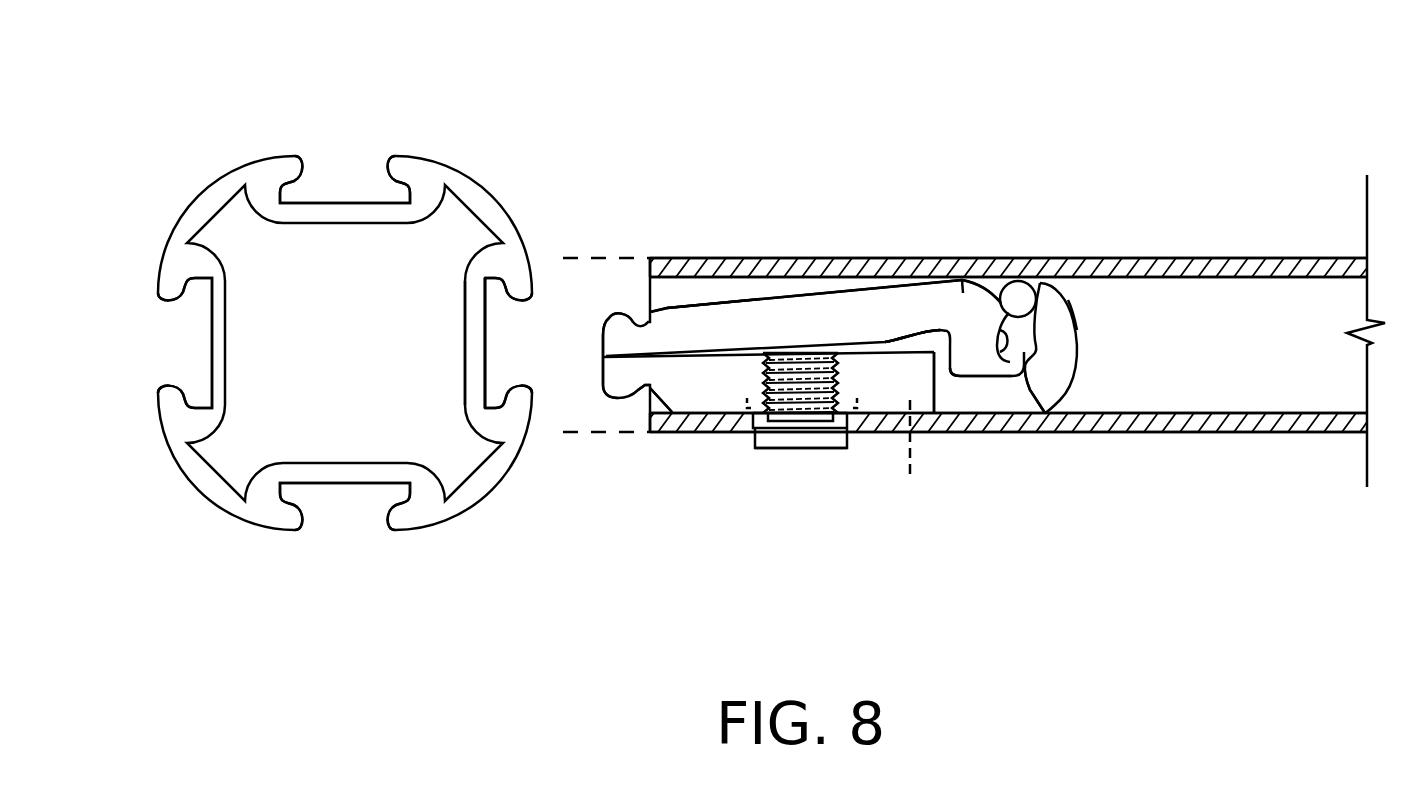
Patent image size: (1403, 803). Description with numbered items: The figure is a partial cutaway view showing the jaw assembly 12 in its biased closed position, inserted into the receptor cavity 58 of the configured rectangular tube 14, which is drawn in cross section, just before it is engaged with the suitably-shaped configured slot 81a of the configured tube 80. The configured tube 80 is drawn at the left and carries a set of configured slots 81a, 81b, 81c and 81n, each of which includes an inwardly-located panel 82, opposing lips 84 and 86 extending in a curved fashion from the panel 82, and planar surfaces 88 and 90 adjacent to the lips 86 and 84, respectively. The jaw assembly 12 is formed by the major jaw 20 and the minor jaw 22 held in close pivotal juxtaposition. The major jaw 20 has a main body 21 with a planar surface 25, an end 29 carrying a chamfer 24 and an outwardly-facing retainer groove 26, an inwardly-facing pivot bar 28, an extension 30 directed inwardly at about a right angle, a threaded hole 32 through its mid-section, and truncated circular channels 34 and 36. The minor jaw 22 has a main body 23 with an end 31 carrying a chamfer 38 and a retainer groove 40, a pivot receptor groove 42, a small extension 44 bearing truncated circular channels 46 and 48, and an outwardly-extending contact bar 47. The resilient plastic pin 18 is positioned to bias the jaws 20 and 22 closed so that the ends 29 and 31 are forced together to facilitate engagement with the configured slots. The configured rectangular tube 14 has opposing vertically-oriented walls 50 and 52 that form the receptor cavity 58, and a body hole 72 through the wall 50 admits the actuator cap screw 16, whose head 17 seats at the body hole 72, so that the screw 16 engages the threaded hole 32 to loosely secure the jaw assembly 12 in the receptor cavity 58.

The jaw assembly 12 is at (711, 284).
The configured rectangular tube 14 is at (1164, 252).
The actuator cap screw 16 is at (763, 450).
The head 17 is at (832, 443).
The resilient plastic pin 18 is at (1018, 293).
The major jaw 20 is at (712, 394).
The main body 21 is at (733, 397).
The minor jaw 22 is at (771, 311).
The main body 23 is at (808, 305).
The chamfer 24 is at (610, 393).
The planar surface 25 is at (967, 357).
The retainer groove 26 is at (647, 388).
The pivot bar 28 is at (934, 413).
The end 29 is at (612, 373).
The extension 30 is at (1063, 350).
The end 31 is at (605, 337).
The threaded hole 32 is at (913, 456).
The truncated circular channel 34 is at (1023, 370).
The truncated circular channel 36 is at (1075, 315).
The chamfer 38 is at (605, 322).
The retainer groove 40 is at (648, 322).
The pivot receptor groove 42 is at (937, 325).
The small extension 44 is at (982, 353).
The truncated circular channel 46 is at (963, 293).
The contact bar 47 is at (960, 296).
The truncated circular channel 48 is at (1007, 333).
The vertically-oriented wall 50 is at (1268, 433).
The vertically-oriented wall 52 is at (1250, 267).
The receptor cavity 58 is at (1235, 361).
The body hole 72 is at (866, 428).
The configured tube 80 is at (203, 180).
The configured slot 81a is at (500, 320).
The configured slot 81b is at (350, 193).
The configured slot 81c is at (193, 330).
The configured slot 81n is at (343, 503).
The inwardly-located panel 82 is at (476, 345).
The lip 84 is at (522, 400).
The lip 86 is at (522, 287).
The planar surface 88 is at (528, 272).
The planar surface 90 is at (532, 413).